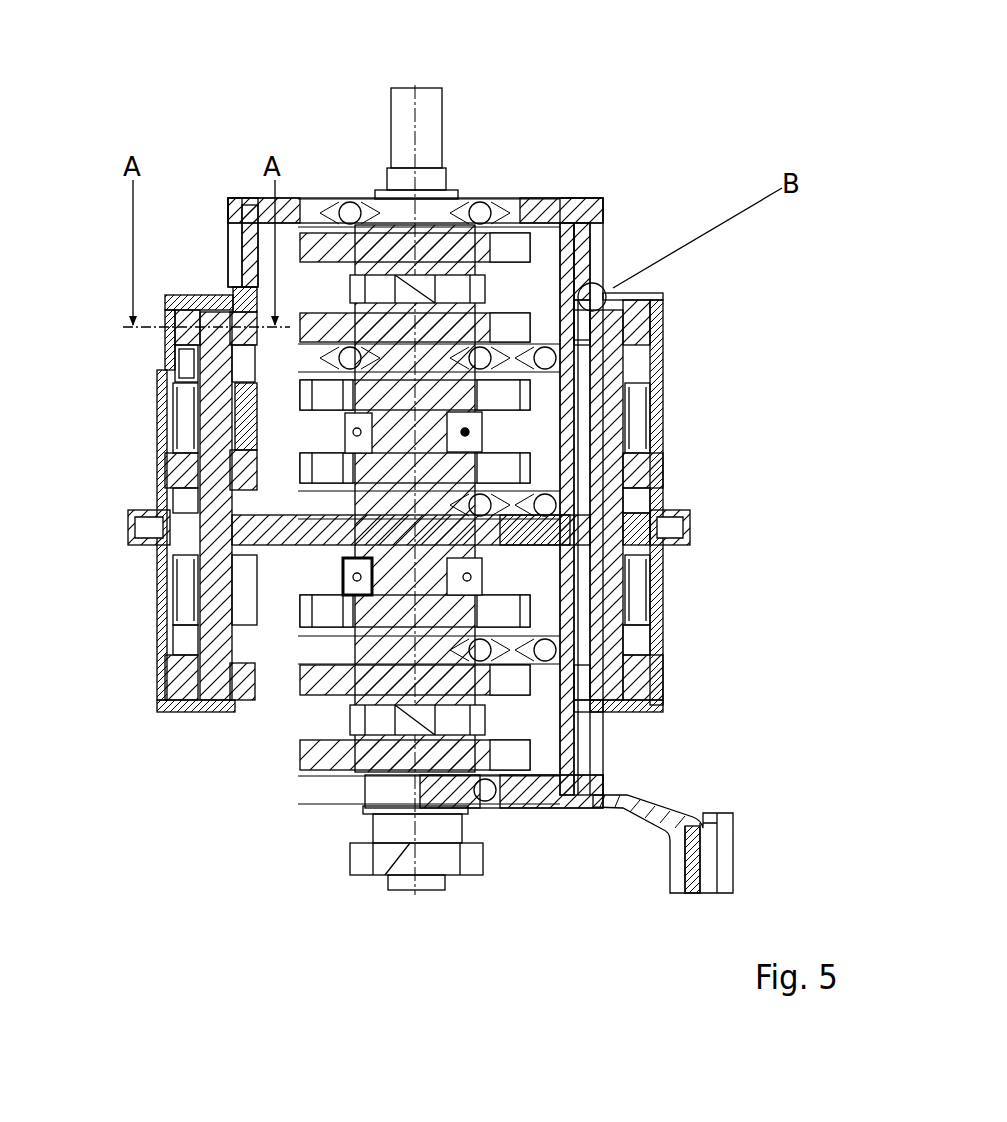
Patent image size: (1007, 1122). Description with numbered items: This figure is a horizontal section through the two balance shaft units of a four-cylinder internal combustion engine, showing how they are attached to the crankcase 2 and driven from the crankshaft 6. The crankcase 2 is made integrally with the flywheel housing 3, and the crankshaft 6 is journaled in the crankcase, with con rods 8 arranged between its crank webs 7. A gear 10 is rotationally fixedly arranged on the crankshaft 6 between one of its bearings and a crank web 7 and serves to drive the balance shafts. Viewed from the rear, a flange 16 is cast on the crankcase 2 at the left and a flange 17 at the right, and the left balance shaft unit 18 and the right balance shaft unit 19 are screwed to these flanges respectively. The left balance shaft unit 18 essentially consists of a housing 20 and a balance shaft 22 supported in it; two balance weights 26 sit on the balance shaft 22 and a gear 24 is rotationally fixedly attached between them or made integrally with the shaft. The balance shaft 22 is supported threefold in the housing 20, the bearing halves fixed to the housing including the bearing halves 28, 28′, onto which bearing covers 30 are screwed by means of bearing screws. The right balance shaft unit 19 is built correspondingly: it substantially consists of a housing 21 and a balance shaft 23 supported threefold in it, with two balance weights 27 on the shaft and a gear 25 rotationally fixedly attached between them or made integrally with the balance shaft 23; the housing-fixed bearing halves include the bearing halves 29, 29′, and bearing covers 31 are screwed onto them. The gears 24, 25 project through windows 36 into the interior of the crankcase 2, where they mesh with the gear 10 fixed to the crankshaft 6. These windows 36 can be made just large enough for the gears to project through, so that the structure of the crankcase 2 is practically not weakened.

The crankcase 2 is at (272, 213).
The flywheel housing 3 is at (692, 865).
The crankshaft 6 is at (402, 112).
The crank web 7 is at (313, 750).
The con rod 8 is at (405, 715).
The gear 10 is at (590, 553).
The flange 16 is at (245, 295).
The flange 17 is at (583, 705).
The balance shaft unit 18 is at (148, 385).
The balance shaft unit 19 is at (677, 305).
The housing 20 is at (170, 510).
The housing 21 is at (655, 495).
The balance shaft 22 is at (215, 330).
The balance shaft 23 is at (610, 367).
The gear 24 is at (157, 530).
The gear 25 is at (645, 528).
The balance weight 26 is at (183, 435).
The balance weight 27 is at (640, 438).
The bearing half fixed to the housing 28 is at (190, 682).
The bearing half fixed to the housing 28′ is at (185, 473).
The bearing half fixed to the housing 29 is at (633, 678).
The bearing half fixed to the housing 29′ is at (640, 470).
The bearing cover 30 is at (240, 680).
The bearing cover 31 is at (578, 683).
The window 36 is at (573, 538).